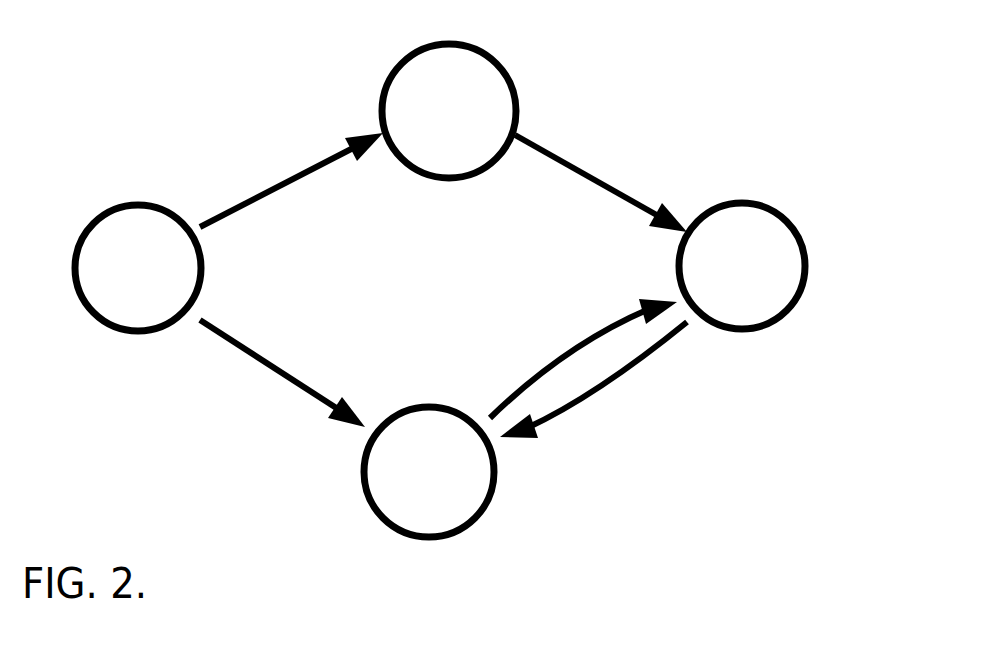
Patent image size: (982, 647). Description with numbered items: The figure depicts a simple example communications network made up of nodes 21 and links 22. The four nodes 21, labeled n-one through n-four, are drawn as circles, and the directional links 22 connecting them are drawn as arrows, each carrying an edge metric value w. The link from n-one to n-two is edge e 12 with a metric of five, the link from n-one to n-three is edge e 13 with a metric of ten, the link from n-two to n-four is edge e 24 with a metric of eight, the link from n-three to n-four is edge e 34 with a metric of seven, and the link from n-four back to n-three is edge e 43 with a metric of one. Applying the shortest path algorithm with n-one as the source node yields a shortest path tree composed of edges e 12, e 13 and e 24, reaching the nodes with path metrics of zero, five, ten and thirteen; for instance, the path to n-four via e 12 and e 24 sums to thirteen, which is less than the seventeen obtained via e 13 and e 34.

The nodes 21 is at (383, 79).
The links 22 is at (541, 281).
The edge e12 from node n1 to node n2 12 is at (291, 161).
The edge e24 from node n2 to node n4 24 is at (601, 158).
The edge e13 from node n1 to node n3 13 is at (282, 389).
The edge e34 from node n3 to node n4 34 is at (573, 357).
The edge e43 from node n4 to node n3 43 is at (600, 399).